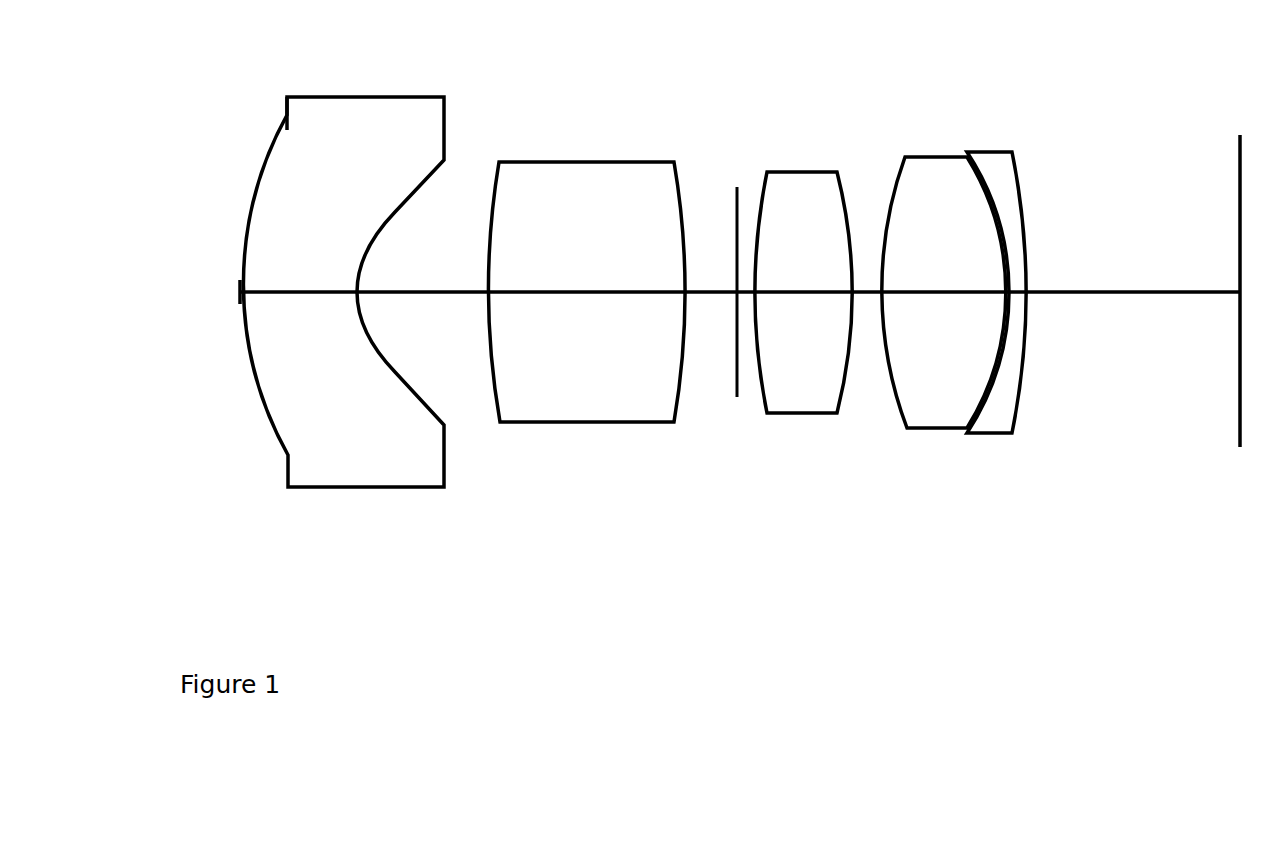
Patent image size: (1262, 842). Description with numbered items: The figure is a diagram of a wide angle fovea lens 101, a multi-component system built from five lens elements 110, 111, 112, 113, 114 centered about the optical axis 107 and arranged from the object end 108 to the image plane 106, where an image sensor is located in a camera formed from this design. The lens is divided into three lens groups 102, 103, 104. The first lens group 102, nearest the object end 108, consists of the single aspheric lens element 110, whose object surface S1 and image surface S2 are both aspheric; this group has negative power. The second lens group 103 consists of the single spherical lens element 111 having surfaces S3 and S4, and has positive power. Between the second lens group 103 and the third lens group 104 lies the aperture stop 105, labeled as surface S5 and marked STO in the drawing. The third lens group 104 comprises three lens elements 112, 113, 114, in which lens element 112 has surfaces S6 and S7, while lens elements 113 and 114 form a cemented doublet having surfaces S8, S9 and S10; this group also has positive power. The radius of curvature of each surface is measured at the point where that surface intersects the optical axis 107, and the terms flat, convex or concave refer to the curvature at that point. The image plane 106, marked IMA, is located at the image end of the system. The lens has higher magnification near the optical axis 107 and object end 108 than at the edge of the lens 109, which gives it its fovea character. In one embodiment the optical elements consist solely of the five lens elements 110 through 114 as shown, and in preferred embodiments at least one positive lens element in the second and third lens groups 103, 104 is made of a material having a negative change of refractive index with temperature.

The wide-angle lens 101 is at (688, 639).
The first lens group 102 is at (457, 517).
The second lens group 103 is at (697, 510).
The third lens group 104 is at (1035, 502).
The aperture stop 105 is at (727, 176).
The image plane 106 is at (1225, 153).
The optical axis 107 is at (1135, 308).
The object end 108 is at (225, 282).
The edge of the lens 109 is at (271, 117).
The first lens element 110 is at (345, 128).
The second lens element 111 is at (585, 196).
The third lens element 112 is at (806, 198).
The fourth lens element 113 is at (928, 231).
The fifth lens element 114 is at (997, 155).
The object surface of first lens element S1 is at (245, 170).
The image surface of first lens element S2 is at (384, 259).
The object surface of second lens element S3 is at (473, 208).
The image surface of second lens element S4 is at (727, 245).
The aperture stop surface S5 is at (729, 414).
The object surface of third lens element S6 is at (755, 390).
The image surface of third lens element S7 is at (850, 392).
The object surface of cemented doublet S8 is at (880, 178).
The cemented surface of doublet S9 is at (975, 199).
The image surface of cemented doublet S10 is at (1037, 204).
The aperture stop surface STO is at (715, 497).
The image surface IMA is at (1228, 472).